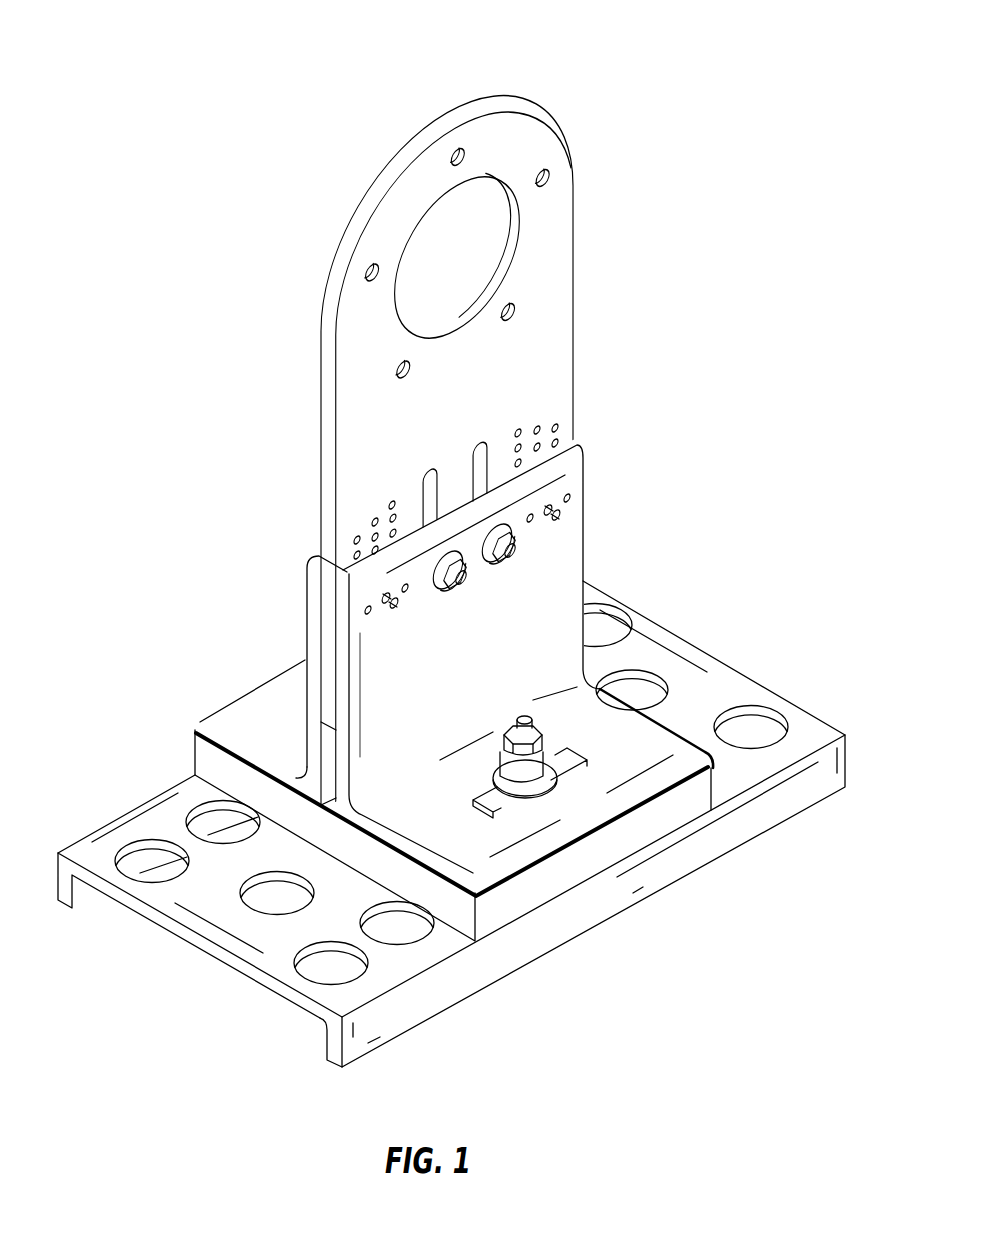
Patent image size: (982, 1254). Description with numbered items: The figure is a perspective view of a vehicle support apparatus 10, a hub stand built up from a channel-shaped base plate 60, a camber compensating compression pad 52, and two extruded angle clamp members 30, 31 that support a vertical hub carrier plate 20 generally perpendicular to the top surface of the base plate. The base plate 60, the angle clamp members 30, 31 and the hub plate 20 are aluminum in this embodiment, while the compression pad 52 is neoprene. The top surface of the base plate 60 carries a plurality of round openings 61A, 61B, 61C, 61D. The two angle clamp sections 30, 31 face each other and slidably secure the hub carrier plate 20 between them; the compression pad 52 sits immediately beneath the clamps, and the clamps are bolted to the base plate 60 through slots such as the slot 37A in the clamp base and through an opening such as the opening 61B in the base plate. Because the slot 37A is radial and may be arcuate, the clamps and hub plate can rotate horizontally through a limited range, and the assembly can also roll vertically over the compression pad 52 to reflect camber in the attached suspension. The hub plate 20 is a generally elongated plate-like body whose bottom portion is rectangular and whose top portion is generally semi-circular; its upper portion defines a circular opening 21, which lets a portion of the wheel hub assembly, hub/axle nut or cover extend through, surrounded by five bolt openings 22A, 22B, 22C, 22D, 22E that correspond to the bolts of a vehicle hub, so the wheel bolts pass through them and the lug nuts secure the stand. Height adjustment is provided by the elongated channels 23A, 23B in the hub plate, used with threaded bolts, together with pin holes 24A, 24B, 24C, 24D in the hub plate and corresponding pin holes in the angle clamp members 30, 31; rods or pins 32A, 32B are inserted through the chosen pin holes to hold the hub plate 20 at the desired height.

The mounting assembly 10 is at (180, 101).
The hub carrier plate 20 is at (543, 230).
The circular opening 21 is at (476, 262).
The bolt opening 22A is at (461, 153).
The bolt opening 22B is at (550, 177).
The bolt opening 22C is at (512, 310).
The bolt opening 22D is at (404, 368).
The bolt opening 22E is at (368, 284).
The elongated channel 23A is at (443, 510).
The elongated channel 23B is at (490, 445).
The pin hole 24A is at (393, 505).
The pin hole 24B is at (355, 562).
The pin hole 24C is at (540, 430).
The pin hole 24D is at (557, 428).
The angle clamp member 30 is at (562, 566).
The angle clamp member 31 is at (243, 722).
The pin 32A is at (384, 600).
The pin 32B is at (572, 500).
The slot 37A is at (573, 747).
The compression pad 52 is at (643, 830).
The base plate 60 is at (583, 905).
The round opening 61A is at (327, 972).
The round opening 61B is at (268, 897).
The round opening 61C is at (633, 688).
The round opening 61D is at (752, 727).